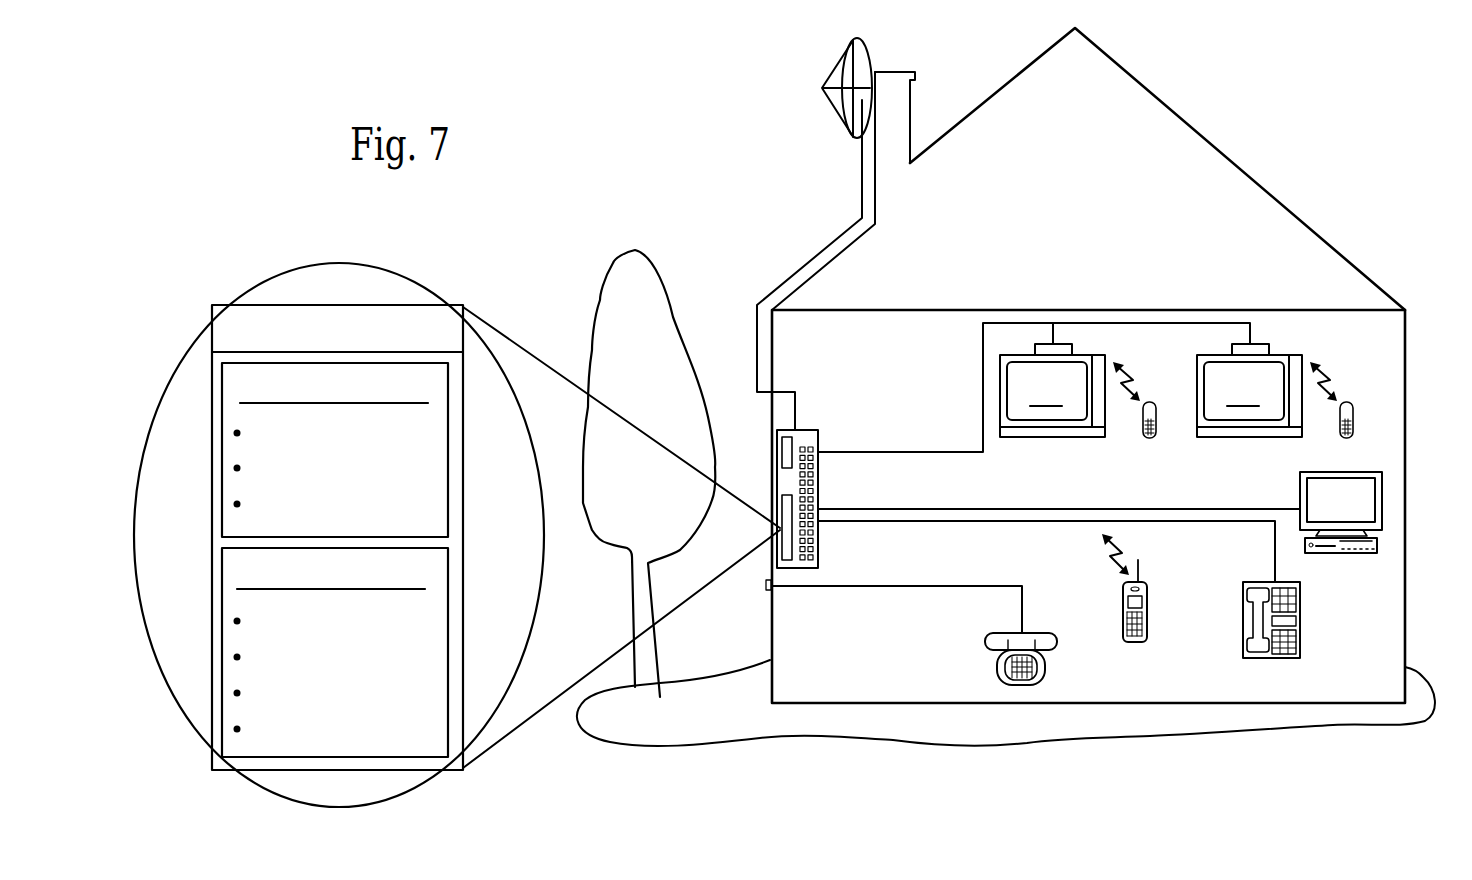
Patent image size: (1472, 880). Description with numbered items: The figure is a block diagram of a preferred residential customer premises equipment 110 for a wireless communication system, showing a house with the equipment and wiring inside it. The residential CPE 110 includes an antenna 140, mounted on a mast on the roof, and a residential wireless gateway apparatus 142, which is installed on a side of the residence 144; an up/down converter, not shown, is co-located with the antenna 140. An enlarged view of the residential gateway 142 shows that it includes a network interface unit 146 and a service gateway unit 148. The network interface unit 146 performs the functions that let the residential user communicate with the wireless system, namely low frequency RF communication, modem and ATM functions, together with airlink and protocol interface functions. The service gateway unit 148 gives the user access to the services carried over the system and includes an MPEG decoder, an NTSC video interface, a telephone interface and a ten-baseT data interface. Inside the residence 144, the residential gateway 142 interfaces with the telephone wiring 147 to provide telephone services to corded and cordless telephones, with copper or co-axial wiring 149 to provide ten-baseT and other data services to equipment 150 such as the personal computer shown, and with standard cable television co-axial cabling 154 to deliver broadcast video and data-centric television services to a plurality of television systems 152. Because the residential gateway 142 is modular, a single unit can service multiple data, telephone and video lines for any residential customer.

The residential customer premises equipment (CPE) 110 is at (1015, 738).
The antenna 140 is at (848, 42).
The residential wireless gateway apparatus 142 is at (780, 482).
The residence 144 is at (1407, 373).
The network interface unit (NIU) 146 is at (221, 384).
The telephone wiring 147 is at (1228, 521).
The service gateway unit 148 is at (227, 715).
The copper or co-axial wiring 149 is at (1235, 509).
The equipment 150 is at (1378, 546).
The television systems 152 is at (1176, 391).
The cable television co-axial cabling 154 is at (985, 352).